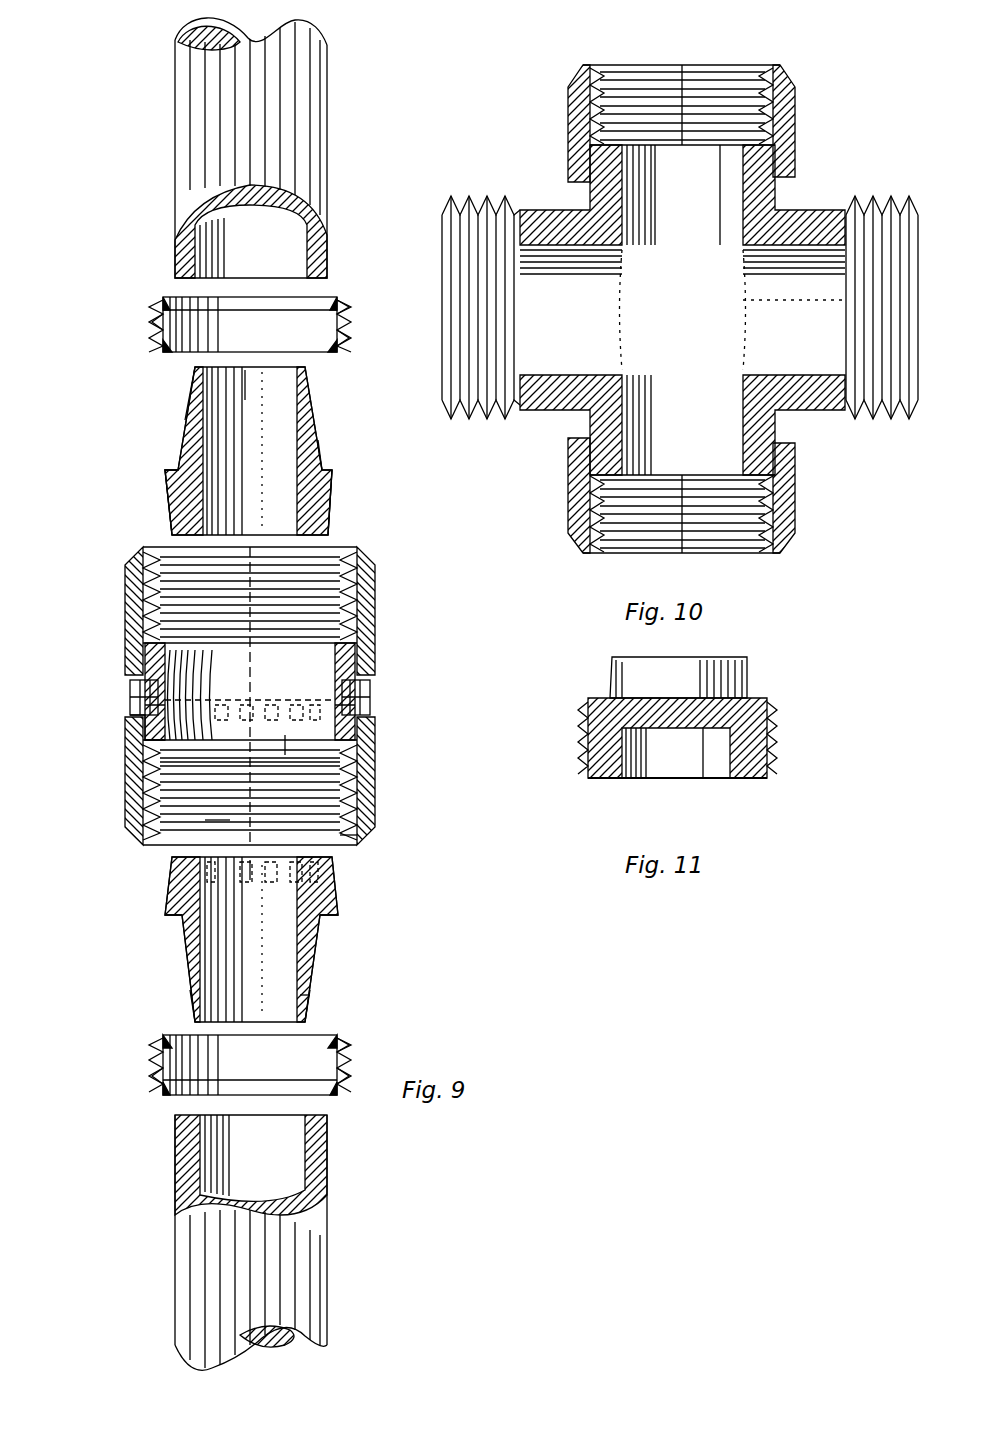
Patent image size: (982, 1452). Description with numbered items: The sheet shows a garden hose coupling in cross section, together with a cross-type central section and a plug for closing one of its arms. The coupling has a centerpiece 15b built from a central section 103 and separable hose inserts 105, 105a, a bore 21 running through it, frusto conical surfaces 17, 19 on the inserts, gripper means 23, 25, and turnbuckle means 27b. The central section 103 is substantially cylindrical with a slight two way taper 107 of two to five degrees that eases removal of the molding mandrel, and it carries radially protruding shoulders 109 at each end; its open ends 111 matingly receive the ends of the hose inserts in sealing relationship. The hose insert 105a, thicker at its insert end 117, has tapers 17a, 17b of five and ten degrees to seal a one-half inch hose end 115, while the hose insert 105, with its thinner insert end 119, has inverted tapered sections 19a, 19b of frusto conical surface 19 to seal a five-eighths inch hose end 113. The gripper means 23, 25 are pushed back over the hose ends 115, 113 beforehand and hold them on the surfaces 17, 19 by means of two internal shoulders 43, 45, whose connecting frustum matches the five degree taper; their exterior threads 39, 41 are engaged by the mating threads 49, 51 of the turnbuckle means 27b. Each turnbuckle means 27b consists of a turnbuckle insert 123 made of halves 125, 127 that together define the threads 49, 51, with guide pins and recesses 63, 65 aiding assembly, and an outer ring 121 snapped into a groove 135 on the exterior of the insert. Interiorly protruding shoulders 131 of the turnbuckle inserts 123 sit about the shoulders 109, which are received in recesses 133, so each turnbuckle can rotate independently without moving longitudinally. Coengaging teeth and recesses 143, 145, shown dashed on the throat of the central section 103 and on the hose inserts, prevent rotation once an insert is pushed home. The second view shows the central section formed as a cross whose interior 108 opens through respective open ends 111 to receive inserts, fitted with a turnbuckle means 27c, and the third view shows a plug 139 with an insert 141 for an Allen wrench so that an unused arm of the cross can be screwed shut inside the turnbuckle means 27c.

In FIG. 9, the hose end 115 is at (175, 100).
In FIG. 9, the gripper means 23 is at (160, 298).
In FIG. 9, the external thread of ring 39 is at (150, 330).
In FIG. 9, the shoulder 45 is at (325, 300).
In FIG. 9, the shoulder 43 is at (332, 345).
In FIG. 9, the frusto conical surface 17 is at (253, 453).
In FIG. 9, the taper 17a is at (192, 388).
In FIG. 9, the taper 17b is at (170, 490).
In FIG. 9, the bore 21 is at (255, 390).
In FIG. 9, the hose insert 105a is at (322, 478).
In FIG. 9, the insert end 117 is at (332, 520).
In FIG. 9, the turnbuckle means 27b is at (254, 721).
In FIG. 9, the guide pins and recesses 65 is at (140, 633).
In FIG. 9, the mating thread 49 is at (340, 548).
In FIG. 9, the guide pins and recesses 63 is at (357, 615).
In FIG. 9, the central section 103 is at (165, 690).
In FIG. 9, the centerpiece 15b is at (427, 683).
In FIG. 9, the interiorly protruding shoulder 131 is at (156, 695).
In FIG. 9, the coengaging teeth and recesses 143 is at (352, 707).
In FIG. 9, the recess 133 is at (150, 730).
In FIG. 9, the radially protruding shoulder 109 is at (352, 742).
In FIG. 9, the two way taper 107 is at (357, 772).
In FIG. 9, the outer ring 121 is at (143, 775).
In FIG. 9, the groove 135 is at (365, 808).
In FIG. 9, the turnbuckle insert 123 is at (150, 828).
In FIG. 9, the half 125 is at (205, 828).
In FIG. 9, the open end 111 is at (355, 845).
In FIG. 10, the open end 111 is at (818, 340).
In FIG. 9, the half 127 is at (290, 745).
In FIG. 9, the frusto conical surface 19 is at (254, 939).
In FIG. 9, the tapered section 19b is at (175, 935).
In FIG. 9, the tapered section 19a is at (195, 1015).
In FIG. 9, the insert end 119 is at (335, 885).
In FIG. 9, the hose insert 105 is at (325, 905).
In FIG. 9, the mating thread 51 is at (245, 862).
In FIG. 9, the coengaging teeth and recesses 145 is at (305, 1000).
In FIG. 9, the coupling ring nut 41 is at (152, 1040).
In FIG. 9, the gripper means 25 is at (152, 1092).
In FIG. 9, the hose end 113 is at (175, 1245).
In FIG. 10, the bore 108 is at (680, 218).
In FIG. 10, the turnbuckle means 27c is at (862, 595).
In FIG. 11, the plug 139 is at (735, 772).
In FIG. 11, the insert 141 is at (675, 770).